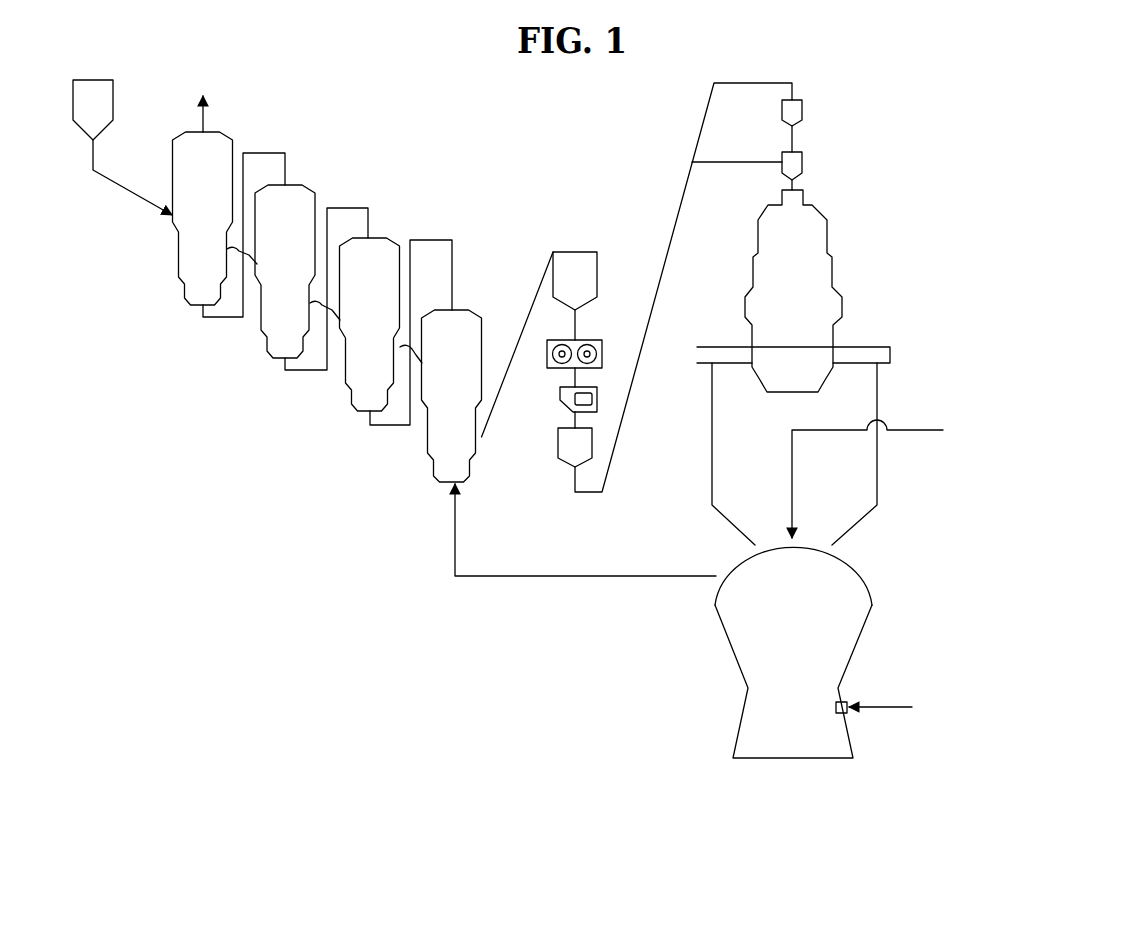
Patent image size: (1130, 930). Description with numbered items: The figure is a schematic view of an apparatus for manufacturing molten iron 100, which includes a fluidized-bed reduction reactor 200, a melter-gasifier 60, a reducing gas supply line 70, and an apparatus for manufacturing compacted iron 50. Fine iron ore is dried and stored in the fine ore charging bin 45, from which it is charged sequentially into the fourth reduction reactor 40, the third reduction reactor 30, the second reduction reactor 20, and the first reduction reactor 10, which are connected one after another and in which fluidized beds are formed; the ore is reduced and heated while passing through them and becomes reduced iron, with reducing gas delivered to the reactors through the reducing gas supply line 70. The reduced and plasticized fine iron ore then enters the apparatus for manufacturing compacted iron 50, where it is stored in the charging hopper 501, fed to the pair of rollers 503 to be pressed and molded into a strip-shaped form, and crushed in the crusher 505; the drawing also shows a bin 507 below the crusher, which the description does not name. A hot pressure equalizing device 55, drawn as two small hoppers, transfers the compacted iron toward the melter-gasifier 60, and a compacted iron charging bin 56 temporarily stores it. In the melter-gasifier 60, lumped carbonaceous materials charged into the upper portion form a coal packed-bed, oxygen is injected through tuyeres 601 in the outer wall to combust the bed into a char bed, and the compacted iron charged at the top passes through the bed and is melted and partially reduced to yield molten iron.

The apparatus for manufacturing molten iron 100 is at (533, 110).
The fluidized-bed reduction reactor 200 is at (379, 121).
The fine ore charging bin 45 is at (94, 80).
The fourth reduction reactor 40 is at (215, 132).
The third reduction reactor 30 is at (297, 185).
The second reduction reactor 20 is at (382, 238).
The first reduction reactor 10 is at (467, 310).
The reducing gas supply line 70 is at (575, 575).
The apparatus for manufacturing compacted iron 50 is at (578, 186).
The charging hopper 501 is at (562, 253).
The pair of rollers 503 is at (597, 340).
The crusher 505 is at (560, 401).
The storage bin 507 is at (558, 450).
The hot pressure equalizing device 55 is at (802, 122).
The compacted iron charging bin 56 is at (828, 227).
The melter-gasifier 60 is at (835, 759).
The tuyeres 601 is at (847, 714).